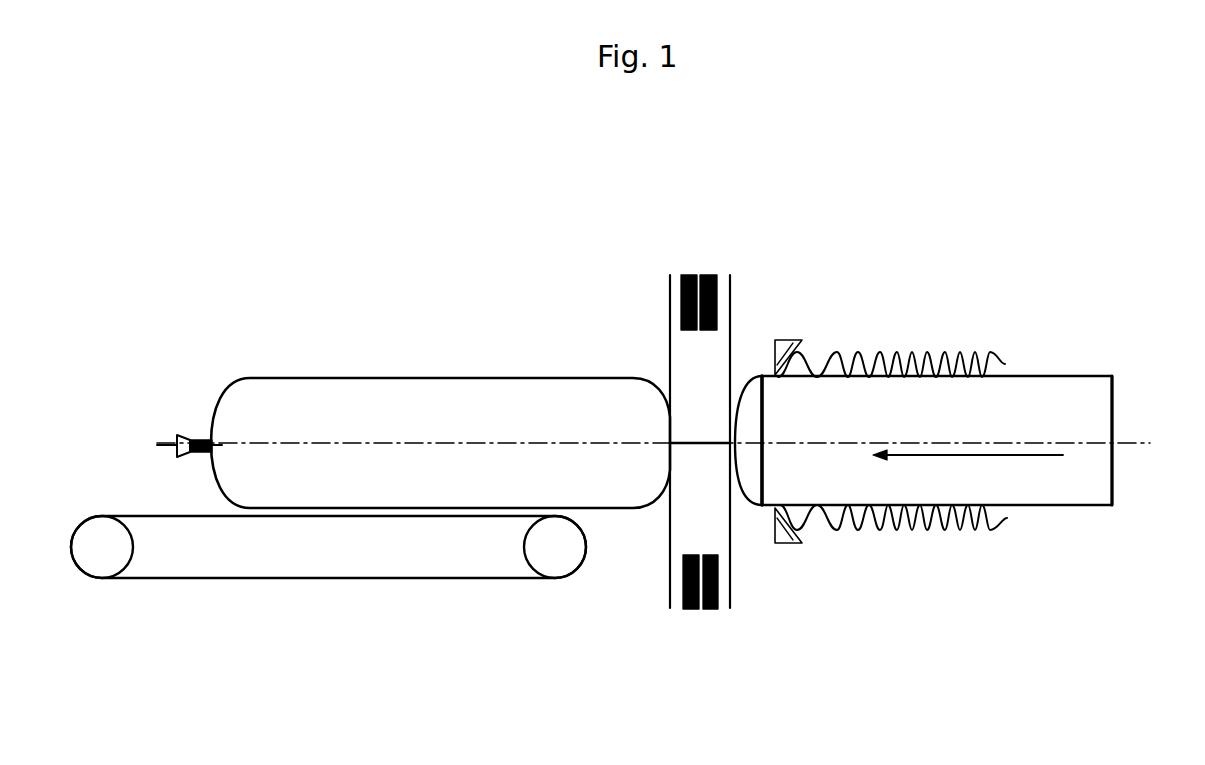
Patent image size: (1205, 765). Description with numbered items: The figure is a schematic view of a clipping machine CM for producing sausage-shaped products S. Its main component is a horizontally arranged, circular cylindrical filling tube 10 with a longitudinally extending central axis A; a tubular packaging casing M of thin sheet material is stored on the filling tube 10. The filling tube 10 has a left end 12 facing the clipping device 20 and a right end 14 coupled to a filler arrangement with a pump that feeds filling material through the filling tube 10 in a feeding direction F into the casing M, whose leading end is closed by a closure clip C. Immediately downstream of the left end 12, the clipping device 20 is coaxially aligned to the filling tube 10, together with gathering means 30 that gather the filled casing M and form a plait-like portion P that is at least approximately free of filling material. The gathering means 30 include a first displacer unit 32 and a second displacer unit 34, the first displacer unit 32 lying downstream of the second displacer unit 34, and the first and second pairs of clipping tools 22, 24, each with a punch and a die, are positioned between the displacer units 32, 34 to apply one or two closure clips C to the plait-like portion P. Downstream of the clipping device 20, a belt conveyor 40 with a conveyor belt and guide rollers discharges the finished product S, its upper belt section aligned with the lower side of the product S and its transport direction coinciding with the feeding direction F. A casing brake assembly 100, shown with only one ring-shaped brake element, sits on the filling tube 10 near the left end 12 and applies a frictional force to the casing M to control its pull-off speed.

The filling tube 10 is at (1041, 374).
The left end 12 is at (765, 468).
The right end 14 is at (1113, 402).
The clipping device 20 is at (660, 443).
The first pair of clipping tools 22 is at (708, 555).
The second pair of clipping tools 24 is at (690, 330).
The gathering means 30 is at (824, 661).
The first displacer unit 32 is at (672, 502).
The second displacer unit 34 is at (732, 522).
The belt conveyor 40 is at (405, 604).
The casing brake assembly 100 is at (792, 337).
The sausage-shaped product S is at (413, 377).
The closure clip C is at (193, 437).
The plait-like portion P is at (708, 437).
The tubular packaging casing M is at (962, 352).
The feeding direction F is at (968, 468).
The central axis A is at (1127, 443).
The clipping machine CM is at (953, 346).